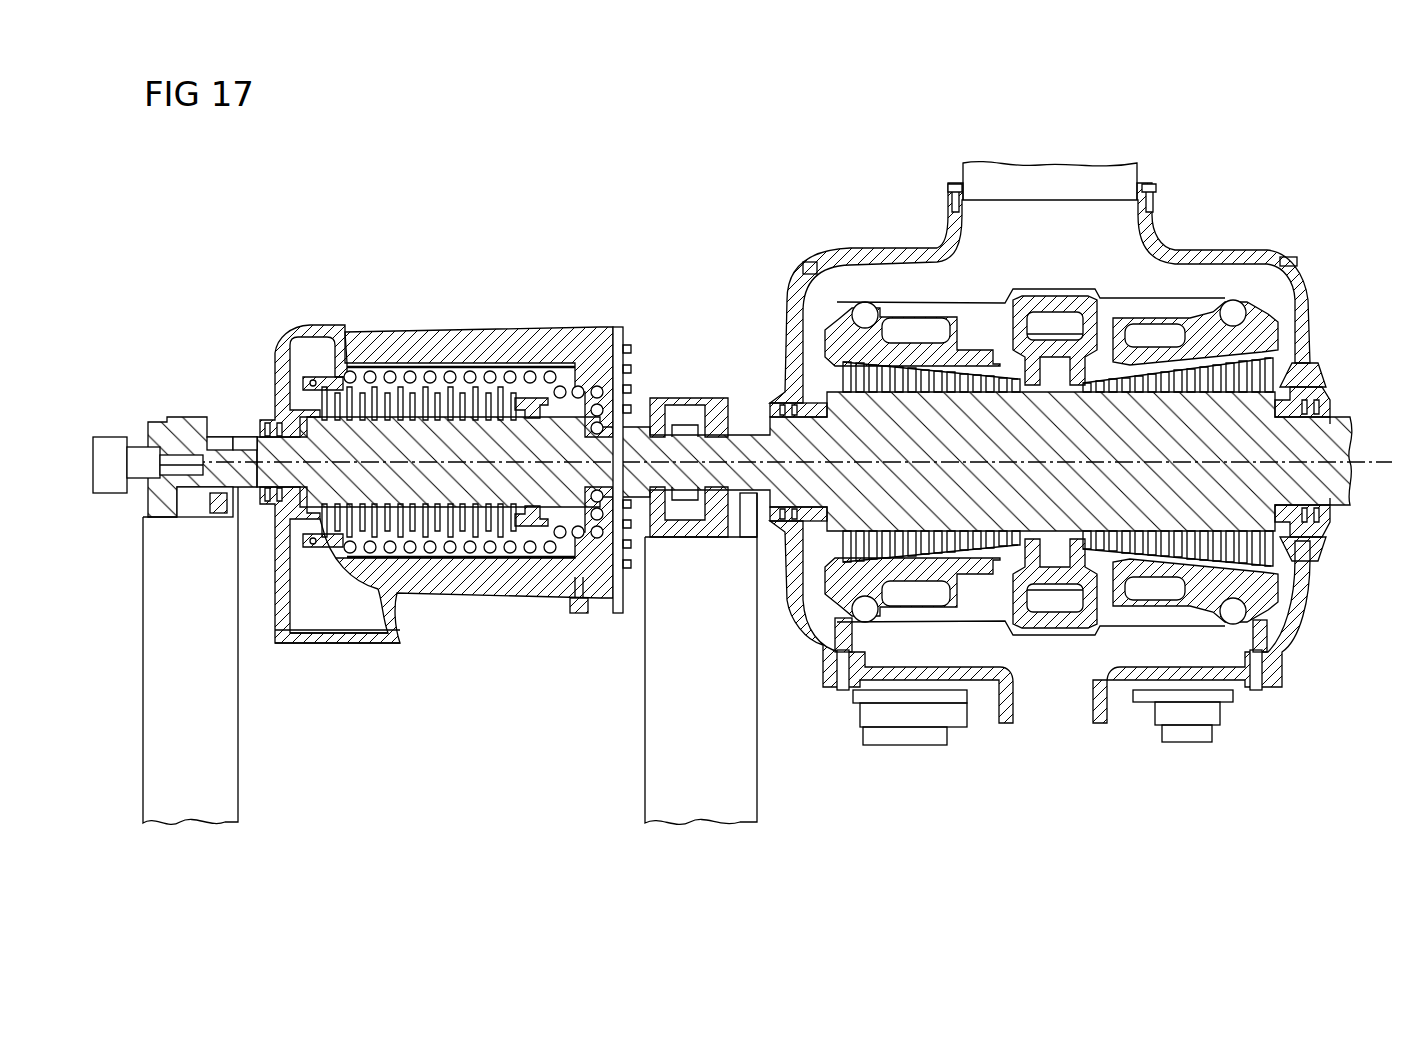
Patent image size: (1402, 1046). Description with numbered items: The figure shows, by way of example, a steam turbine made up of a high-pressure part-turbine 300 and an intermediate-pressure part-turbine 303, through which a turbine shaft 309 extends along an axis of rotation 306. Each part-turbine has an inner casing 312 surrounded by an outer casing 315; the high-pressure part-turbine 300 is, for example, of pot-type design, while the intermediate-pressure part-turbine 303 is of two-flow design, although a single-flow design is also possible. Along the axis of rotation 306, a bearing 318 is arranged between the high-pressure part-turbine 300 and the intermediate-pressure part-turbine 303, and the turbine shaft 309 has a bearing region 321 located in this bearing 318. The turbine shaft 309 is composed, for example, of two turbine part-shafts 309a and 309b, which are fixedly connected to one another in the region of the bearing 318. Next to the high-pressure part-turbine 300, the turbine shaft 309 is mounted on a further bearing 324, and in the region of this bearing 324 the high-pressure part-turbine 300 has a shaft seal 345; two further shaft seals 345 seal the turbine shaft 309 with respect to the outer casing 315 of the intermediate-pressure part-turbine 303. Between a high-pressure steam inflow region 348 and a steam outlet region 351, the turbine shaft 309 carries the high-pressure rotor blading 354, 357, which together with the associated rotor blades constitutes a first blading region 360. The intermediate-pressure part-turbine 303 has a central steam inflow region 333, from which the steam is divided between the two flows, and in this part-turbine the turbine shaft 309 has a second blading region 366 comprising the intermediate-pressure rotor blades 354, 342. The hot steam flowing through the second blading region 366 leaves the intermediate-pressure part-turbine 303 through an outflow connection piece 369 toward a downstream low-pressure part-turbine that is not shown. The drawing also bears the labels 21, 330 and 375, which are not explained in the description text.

The compressor blading 21 is at (412, 365).
The high-pressure part-turbine 300 is at (553, 335).
The intermediate-pressure part-turbine 303 is at (1213, 277).
The axis of rotation 306 is at (1352, 420).
The turbine shaft 309 is at (692, 653).
The turbine part-shaft 309a is at (783, 590).
The turbine part-shaft 309b is at (573, 545).
The inner casing 312 is at (1277, 320).
The outer casing 315 is at (767, 310).
The bearing 318 is at (720, 443).
The bearing region 321 is at (683, 443).
The further bearing 324 is at (133, 492).
The shaft seal 330 is at (1287, 377).
The central steam inflow region 333 is at (1057, 587).
The intermediate-pressure rotor blades 342 is at (1283, 590).
The shaft seal 345 is at (268, 410).
The high-pressure steam inflow region 348 is at (531, 392).
The steam outlet region 351 is at (298, 382).
The rotor blading 354 is at (825, 605).
The high-pressure rotor blading 357 is at (436, 598).
The first blading region 360 is at (356, 590).
The second blading region 366 is at (983, 627).
The outflow connection piece 369 is at (1100, 180).
The bearing pedestal 375 is at (249, 655).